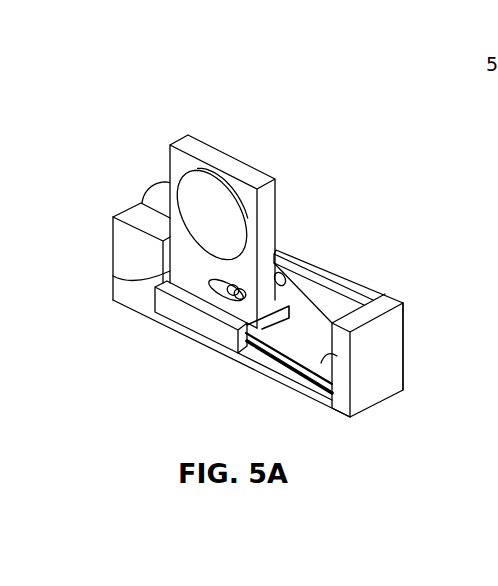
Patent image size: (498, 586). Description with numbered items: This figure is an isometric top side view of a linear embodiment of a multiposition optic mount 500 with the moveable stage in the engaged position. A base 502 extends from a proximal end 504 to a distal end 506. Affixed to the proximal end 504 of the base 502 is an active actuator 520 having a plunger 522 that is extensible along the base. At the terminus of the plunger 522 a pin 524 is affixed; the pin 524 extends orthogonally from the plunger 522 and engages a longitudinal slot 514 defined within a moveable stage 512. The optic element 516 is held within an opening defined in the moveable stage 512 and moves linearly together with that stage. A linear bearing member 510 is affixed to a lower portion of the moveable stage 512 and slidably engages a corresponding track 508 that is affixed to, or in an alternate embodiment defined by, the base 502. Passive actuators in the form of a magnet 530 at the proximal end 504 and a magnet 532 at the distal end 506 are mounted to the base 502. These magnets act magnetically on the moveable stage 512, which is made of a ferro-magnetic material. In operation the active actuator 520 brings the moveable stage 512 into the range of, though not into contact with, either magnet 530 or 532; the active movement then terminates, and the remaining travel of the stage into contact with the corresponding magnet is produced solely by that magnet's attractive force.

The optical assembly 500 is at (157, 102).
The base 502 is at (390, 272).
The proximal end 504 is at (127, 298).
The distal end 506 is at (375, 397).
The track 508 is at (302, 376).
The linear bearing member 510 is at (220, 335).
The moveable stage 512 is at (256, 186).
The longitudinal slot 514 is at (158, 292).
The optic element 516 is at (203, 214).
The actuator 520 is at (170, 186).
The plunger 522 is at (284, 273).
The pin 524 is at (203, 298).
The magnet 530 is at (112, 274).
The magnet 532 is at (334, 357).